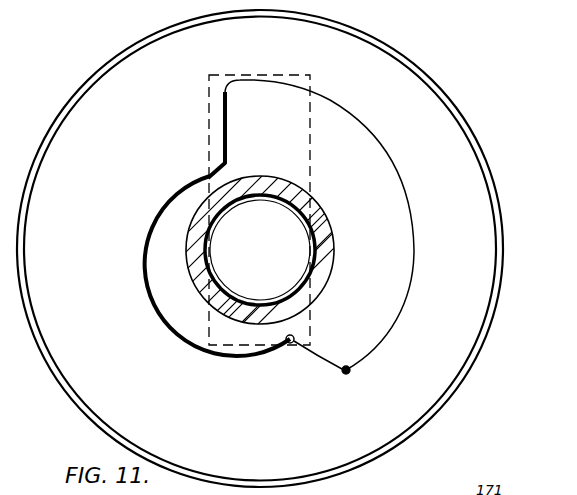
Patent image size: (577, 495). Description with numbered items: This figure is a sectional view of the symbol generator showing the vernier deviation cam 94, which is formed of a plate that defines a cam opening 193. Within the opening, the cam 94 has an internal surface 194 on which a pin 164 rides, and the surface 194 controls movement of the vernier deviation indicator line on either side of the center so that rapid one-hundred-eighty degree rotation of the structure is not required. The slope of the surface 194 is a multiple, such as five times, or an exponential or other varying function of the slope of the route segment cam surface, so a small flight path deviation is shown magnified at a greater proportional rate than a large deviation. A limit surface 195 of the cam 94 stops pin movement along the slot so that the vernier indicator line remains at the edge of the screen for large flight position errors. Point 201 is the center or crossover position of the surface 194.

The vernier deviation cam 94 is at (417, 92).
The cam opening 193 is at (213, 173).
The limit surface 195 is at (170, 262).
The internal surface 194 is at (388, 337).
The pin 164 is at (293, 336).
The point 201 is at (346, 374).